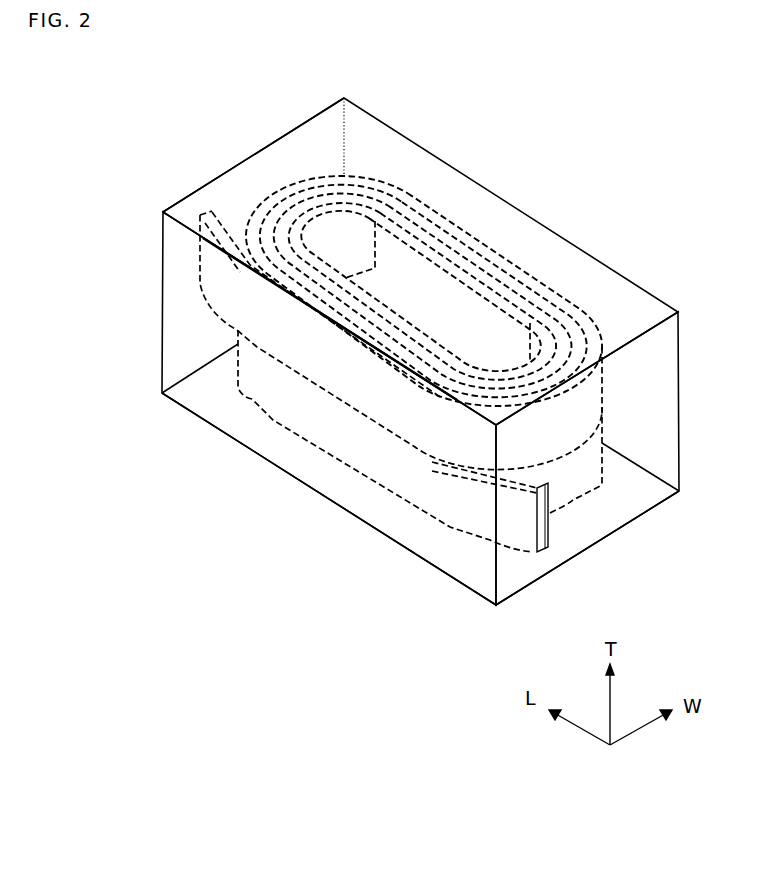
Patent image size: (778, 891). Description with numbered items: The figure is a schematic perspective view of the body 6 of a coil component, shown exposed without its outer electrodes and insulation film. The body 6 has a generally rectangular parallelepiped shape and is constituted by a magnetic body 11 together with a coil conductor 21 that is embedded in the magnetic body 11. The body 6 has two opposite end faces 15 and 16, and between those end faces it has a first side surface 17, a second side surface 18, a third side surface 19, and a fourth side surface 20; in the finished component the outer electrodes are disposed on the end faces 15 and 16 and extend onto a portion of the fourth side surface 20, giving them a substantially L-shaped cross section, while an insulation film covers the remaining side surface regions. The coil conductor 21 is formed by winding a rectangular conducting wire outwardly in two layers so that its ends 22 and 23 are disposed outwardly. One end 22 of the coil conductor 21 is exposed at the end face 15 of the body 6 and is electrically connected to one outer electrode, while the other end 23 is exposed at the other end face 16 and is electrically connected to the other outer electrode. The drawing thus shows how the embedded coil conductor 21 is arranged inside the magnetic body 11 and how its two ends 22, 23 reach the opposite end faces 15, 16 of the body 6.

The body 6 is at (609, 151).
The magnetic body 11 is at (456, 181).
The end face 15 is at (657, 397).
The end face 16 is at (249, 176).
The first side surface 17 is at (250, 427).
The second side surface 18 is at (320, 474).
The third side surface 19 is at (613, 291).
The fourth side surface 20 is at (566, 262).
The coil conductor 21 is at (498, 245).
The end of the coil conductor 22 is at (543, 523).
The other end of the coil conductor 23 is at (199, 248).